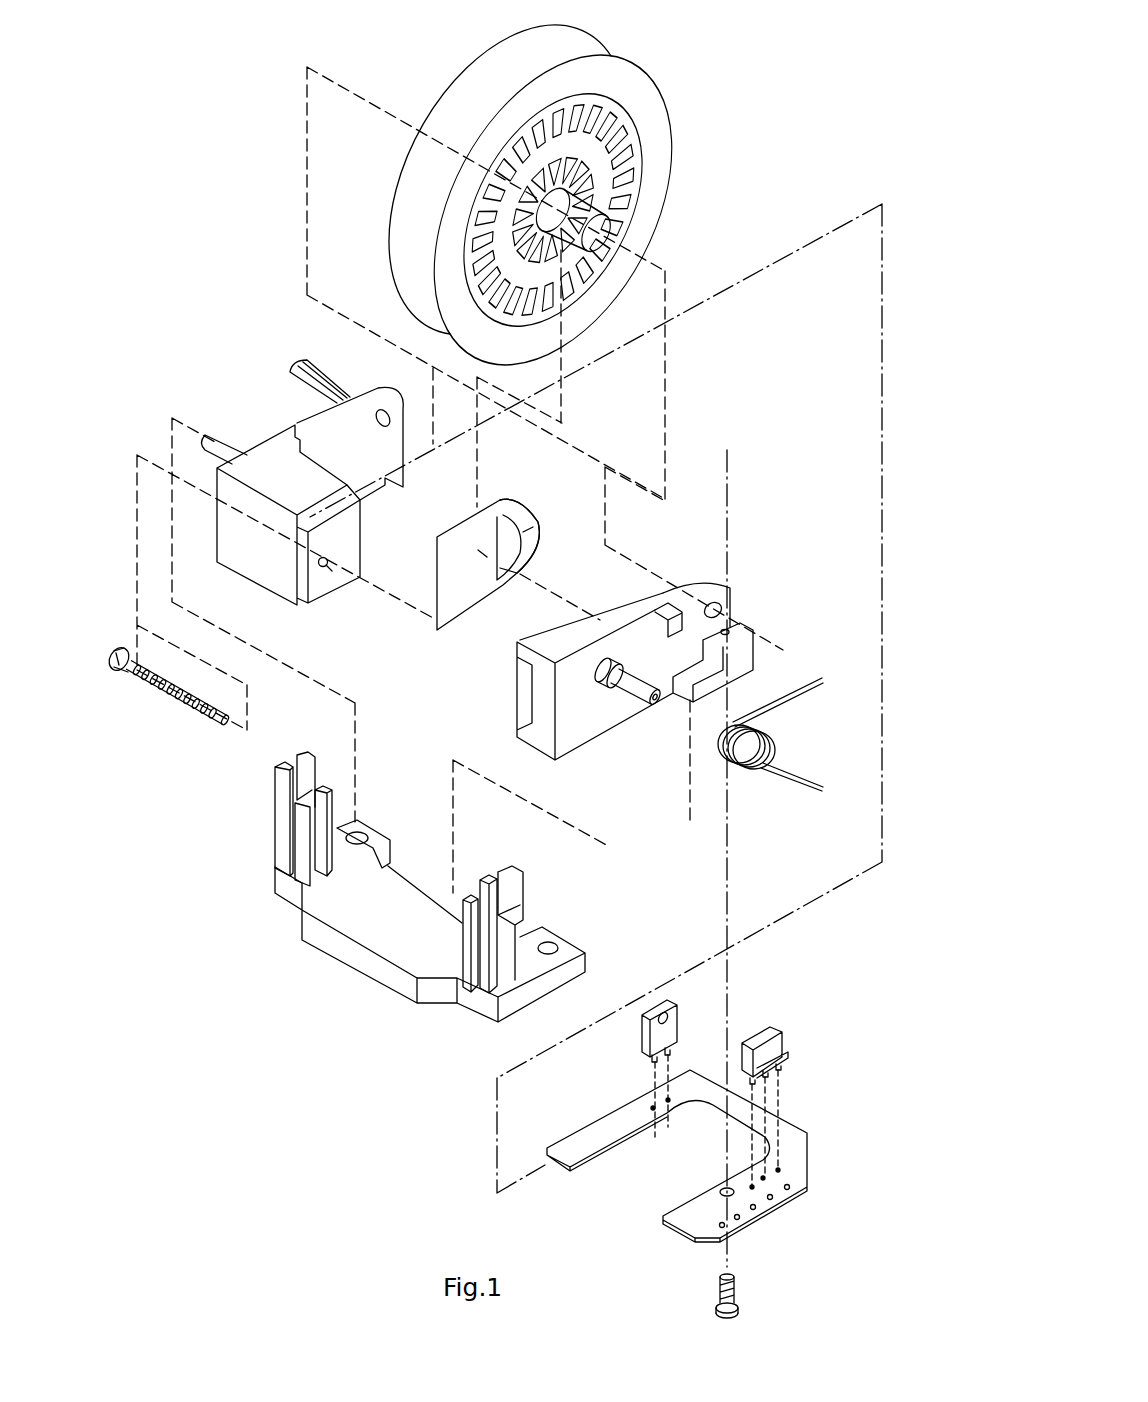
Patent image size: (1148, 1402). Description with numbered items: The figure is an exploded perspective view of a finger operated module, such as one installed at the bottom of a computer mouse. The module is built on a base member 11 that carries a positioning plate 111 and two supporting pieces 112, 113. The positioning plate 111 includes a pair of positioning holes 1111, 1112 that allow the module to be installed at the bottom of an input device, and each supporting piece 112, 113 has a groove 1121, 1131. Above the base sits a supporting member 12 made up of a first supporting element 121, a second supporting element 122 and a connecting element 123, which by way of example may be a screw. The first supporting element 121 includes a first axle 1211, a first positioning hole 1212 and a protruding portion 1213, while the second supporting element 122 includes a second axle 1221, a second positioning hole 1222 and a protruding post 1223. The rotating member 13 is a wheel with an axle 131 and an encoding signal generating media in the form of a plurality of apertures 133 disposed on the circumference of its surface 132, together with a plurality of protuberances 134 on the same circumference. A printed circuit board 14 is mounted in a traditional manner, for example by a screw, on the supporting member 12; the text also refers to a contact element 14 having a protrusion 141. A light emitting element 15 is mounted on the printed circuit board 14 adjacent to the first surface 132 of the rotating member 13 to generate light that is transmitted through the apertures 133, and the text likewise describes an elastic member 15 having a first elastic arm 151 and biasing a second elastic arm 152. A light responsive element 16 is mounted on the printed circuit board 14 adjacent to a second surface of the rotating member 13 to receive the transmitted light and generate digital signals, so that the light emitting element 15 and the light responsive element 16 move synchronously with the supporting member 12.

The base member 11 is at (452, 854).
The positioning plate 111 is at (393, 900).
The positioning hole 1111 is at (573, 963).
The positioning hole 1112 is at (360, 833).
The supporting piece 112 is at (523, 899).
The groove 1121 is at (510, 917).
The supporting piece 113 is at (302, 785).
The groove 1131 is at (300, 758).
The supporting member 12 is at (530, 703).
The first supporting element 121 is at (727, 578).
The first axle 1211 is at (638, 694).
The first positioning hole 1212 is at (722, 610).
The protruding portion 1213 is at (680, 620).
The second supporting element 122 is at (277, 450).
The second axle 1221 is at (218, 435).
The second positioning hole 1222 is at (385, 408).
The protruding post 1223 is at (293, 372).
The connecting element 123 is at (141, 673).
The rotating member 13 is at (575, 48).
The axle 131 is at (614, 214).
The surface 132 is at (610, 105).
The apertures 133 is at (622, 136).
The protuberances 134 is at (593, 186).
The printed circuit board 14 is at (467, 531).
The protrusion 141 is at (533, 530).
The light emitting element 15 is at (783, 904).
The first elastic arm 151 is at (793, 690).
The second elastic arm 152 is at (788, 768).
The light responsive element 16 is at (657, 1030).